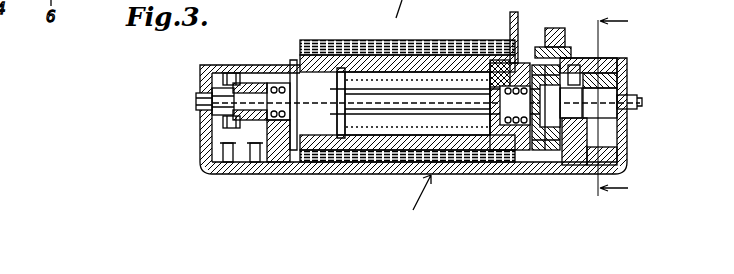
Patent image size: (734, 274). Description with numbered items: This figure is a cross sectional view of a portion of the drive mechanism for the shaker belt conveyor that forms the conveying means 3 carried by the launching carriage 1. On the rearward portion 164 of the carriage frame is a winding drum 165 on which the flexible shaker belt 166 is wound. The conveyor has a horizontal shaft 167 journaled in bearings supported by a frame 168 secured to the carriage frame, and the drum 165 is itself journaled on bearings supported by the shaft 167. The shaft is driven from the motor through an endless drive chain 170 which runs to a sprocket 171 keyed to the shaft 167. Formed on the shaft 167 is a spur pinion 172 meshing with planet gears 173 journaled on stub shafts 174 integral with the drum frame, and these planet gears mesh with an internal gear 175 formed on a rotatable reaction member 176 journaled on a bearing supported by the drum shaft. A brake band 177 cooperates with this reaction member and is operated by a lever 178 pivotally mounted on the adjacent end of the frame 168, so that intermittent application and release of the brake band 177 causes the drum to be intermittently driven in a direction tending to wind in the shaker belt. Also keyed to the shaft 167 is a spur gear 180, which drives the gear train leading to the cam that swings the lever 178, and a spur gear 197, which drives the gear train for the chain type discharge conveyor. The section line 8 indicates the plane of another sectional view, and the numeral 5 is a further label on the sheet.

The launching carriage 1 is at (420, 193).
The conveying means 3 is at (344, 34).
The stator core 5 is at (403, 9).
The section line 8- 8 is at (618, 104).
The rearward portion of the carriage frame 164 is at (212, 170).
The winding drum 165 is at (433, 46).
The flexible shaker belt 166 is at (396, 45).
The horizontal shaft 167 is at (413, 106).
The frame 168 is at (282, 140).
The endless drive chain 170 is at (212, 96).
The sprocket 171 is at (214, 122).
The spur pinion 172 is at (500, 163).
The planet gears 173 is at (520, 40).
The stub shafts 174 is at (503, 48).
The internal gear 175 is at (541, 140).
The rotatable reaction member 176 is at (562, 60).
The brake band 177 is at (565, 158).
The lever 178 is at (556, 26).
The spur gear 180 is at (606, 120).
The spur gear 197 is at (246, 84).